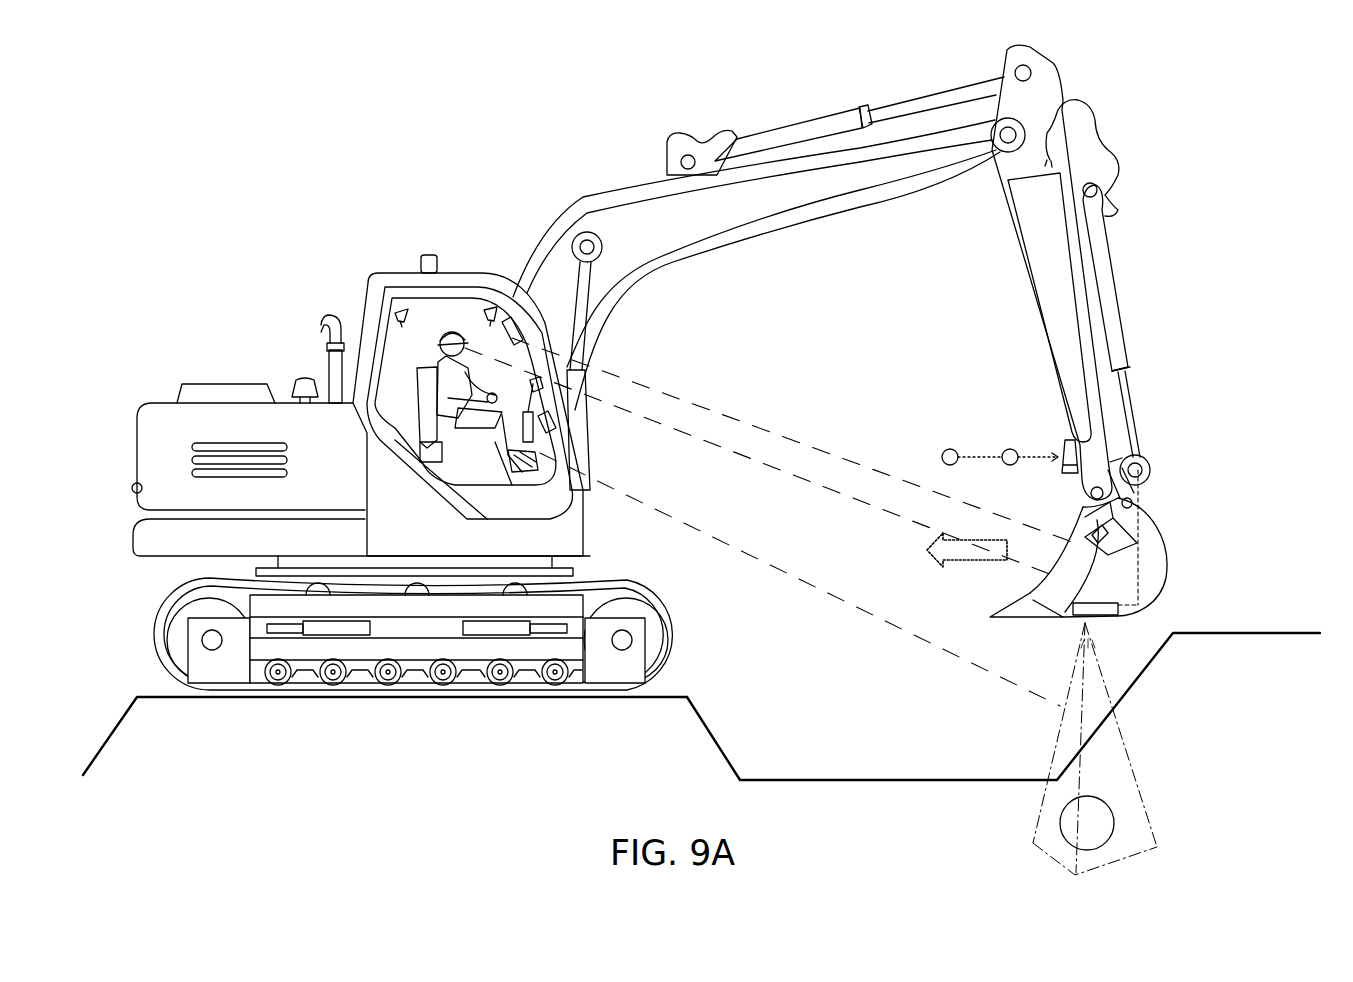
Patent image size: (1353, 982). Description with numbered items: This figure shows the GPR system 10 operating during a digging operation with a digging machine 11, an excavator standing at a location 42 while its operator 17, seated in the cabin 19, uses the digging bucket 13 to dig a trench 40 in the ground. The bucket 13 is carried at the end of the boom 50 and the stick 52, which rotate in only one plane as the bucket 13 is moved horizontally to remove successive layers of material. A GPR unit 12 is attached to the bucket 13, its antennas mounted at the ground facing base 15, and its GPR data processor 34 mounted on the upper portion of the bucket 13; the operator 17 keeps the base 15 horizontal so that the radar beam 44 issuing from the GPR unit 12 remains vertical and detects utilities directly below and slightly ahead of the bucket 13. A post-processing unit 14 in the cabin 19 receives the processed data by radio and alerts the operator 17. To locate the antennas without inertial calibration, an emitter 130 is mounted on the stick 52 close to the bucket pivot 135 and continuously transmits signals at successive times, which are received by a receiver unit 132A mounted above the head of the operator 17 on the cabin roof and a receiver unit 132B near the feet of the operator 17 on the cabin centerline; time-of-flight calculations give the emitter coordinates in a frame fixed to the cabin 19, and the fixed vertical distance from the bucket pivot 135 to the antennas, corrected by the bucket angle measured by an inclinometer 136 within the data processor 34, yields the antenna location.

The GPR system 10 is at (238, 128).
The digging machine 11 is at (155, 378).
The GPR unit 12 is at (1107, 622).
The digging bucket 13 is at (1168, 556).
The post-processing unit 14 is at (545, 437).
The ground facing base 15 is at (1017, 617).
The operator 17 is at (438, 365).
The cabin 19 is at (408, 275).
The GPR data processor 34 is at (1137, 540).
The trench 40 is at (857, 748).
The location 42 is at (410, 712).
The radar beam 44 is at (1117, 823).
The boom 50 is at (693, 223).
The stick 52 is at (1053, 293).
The emitter 130 is at (1064, 442).
The receiver unit 132A is at (511, 318).
The receiver unit 132B is at (545, 422).
The bucket pivot 135 is at (1140, 460).
The inclinometer 136 is at (1133, 502).